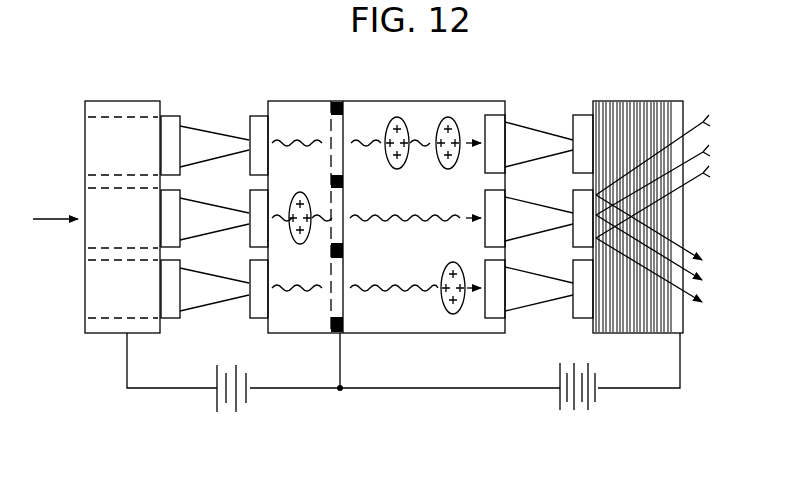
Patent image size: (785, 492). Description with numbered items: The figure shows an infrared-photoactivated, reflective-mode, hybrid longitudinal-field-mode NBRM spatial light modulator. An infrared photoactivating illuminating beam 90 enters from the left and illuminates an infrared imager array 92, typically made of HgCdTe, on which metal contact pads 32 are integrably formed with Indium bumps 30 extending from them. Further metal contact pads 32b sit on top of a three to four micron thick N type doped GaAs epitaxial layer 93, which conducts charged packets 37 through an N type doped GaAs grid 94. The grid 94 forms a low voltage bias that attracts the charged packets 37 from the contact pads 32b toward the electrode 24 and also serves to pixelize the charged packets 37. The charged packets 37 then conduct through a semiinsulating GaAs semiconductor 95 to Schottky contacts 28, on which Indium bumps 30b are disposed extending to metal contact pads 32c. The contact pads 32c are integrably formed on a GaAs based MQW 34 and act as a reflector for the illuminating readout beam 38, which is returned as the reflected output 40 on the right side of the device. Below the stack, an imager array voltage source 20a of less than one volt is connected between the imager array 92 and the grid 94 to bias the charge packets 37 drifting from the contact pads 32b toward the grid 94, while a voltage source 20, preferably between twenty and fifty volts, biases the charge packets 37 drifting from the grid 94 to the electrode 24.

The infrared photoactivating illuminating beam 90 is at (48, 218).
The infrared imager array 92 is at (99, 101).
The metal contact pads 32 is at (177, 115).
The Indium bumps 30 is at (207, 130).
The metal contact pads 32b is at (253, 116).
The N type doped GaAs epitaxial layer 93 is at (300, 101).
The N type doped GaAs grid 94 is at (336, 101).
The charged packets 37 is at (388, 125).
The semiinsulating GaAs semiconductor 95 is at (402, 101).
The Schottky contacts 28 is at (488, 115).
The Indium bumps 30b is at (525, 122).
The metal contact pads 32c is at (572, 113).
The GaAs based MQW 34 is at (624, 72).
The electrode 24 is at (678, 101).
The illuminating readout beam 38 is at (704, 154).
The output light beams 40 is at (703, 269).
The imager array voltage source 20a is at (219, 403).
The voltage source 20 is at (562, 400).